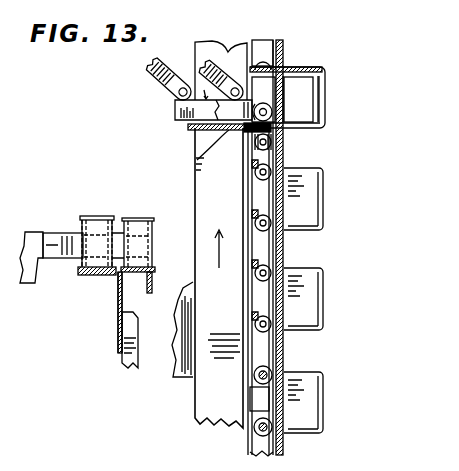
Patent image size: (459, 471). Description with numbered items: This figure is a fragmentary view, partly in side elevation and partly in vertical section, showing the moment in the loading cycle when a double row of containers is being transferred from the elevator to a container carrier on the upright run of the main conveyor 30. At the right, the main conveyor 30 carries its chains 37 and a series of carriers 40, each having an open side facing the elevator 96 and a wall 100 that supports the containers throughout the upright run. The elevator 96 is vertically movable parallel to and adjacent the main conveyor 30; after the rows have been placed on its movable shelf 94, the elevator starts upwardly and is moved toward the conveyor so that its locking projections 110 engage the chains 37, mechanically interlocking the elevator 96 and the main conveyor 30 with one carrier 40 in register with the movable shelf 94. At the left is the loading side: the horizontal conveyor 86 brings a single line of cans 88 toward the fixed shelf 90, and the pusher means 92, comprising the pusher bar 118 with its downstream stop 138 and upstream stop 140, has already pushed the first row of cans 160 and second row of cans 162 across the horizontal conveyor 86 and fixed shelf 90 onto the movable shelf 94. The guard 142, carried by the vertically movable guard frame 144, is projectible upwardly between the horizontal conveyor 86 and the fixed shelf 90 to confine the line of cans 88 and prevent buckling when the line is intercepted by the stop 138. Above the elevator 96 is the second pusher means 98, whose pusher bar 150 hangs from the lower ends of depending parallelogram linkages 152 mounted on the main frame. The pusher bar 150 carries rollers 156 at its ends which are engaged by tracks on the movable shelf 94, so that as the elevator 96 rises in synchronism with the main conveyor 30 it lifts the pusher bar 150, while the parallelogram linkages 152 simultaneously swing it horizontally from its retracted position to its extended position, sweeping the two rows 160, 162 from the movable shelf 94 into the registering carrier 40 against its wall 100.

The main conveyor 30 is at (273, 45).
The chains 37 is at (271, 55).
The carrier 40 is at (323, 69).
The horizontal conveyor 86 is at (95, 276).
The cans 88 is at (100, 217).
The fixed shelf 90 is at (151, 273).
The pusher means 92 is at (71, 262).
The movable shelf 94 is at (197, 160).
The elevator 96 is at (210, 396).
The pusher means 98 is at (228, 51).
The wall 100 is at (301, 128).
The locking projections 110 is at (259, 400).
The pusher bar 118 is at (131, 230).
The stop 138 is at (151, 233).
The stop 140 is at (52, 268).
The guard 142 is at (117, 294).
The guard frame 144 is at (120, 367).
The pusher bar 150 is at (246, 110).
The parallelogram linkages 152 is at (170, 62).
The rollers 156 is at (266, 106).
The first row of cans 160 is at (303, 68).
The second row of cans 162 is at (287, 63).